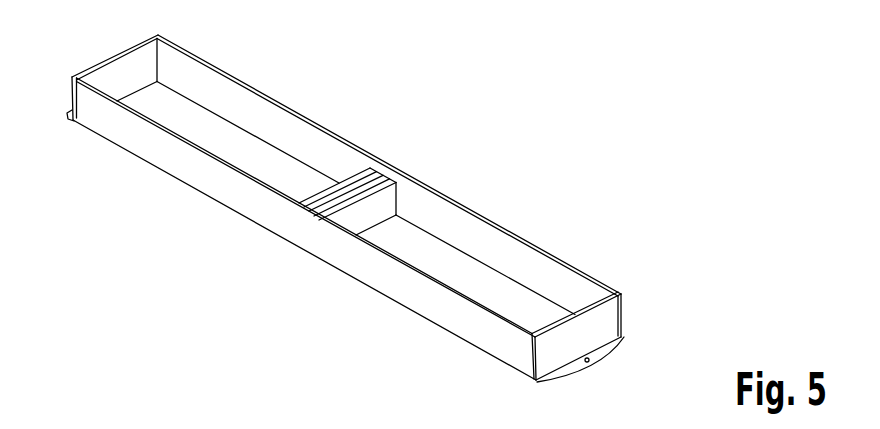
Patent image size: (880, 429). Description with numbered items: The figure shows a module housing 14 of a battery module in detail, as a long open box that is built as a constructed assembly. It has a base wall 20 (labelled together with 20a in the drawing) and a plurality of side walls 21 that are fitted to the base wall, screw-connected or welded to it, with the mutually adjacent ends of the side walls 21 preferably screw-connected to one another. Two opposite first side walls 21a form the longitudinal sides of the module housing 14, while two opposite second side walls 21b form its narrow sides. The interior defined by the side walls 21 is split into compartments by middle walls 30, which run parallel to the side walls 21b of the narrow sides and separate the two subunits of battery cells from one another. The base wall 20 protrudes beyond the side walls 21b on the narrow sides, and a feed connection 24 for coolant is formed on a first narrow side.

The module housing 14 is at (508, 202).
The base wall 20 is at (397, 207).
The housing base 20a is at (240, 142).
The side walls 21 is at (397, 207).
The first side walls 21a is at (298, 228).
The second side walls 21b is at (101, 77).
The middle walls 30 is at (350, 163).
The feed connection 24 is at (590, 360).